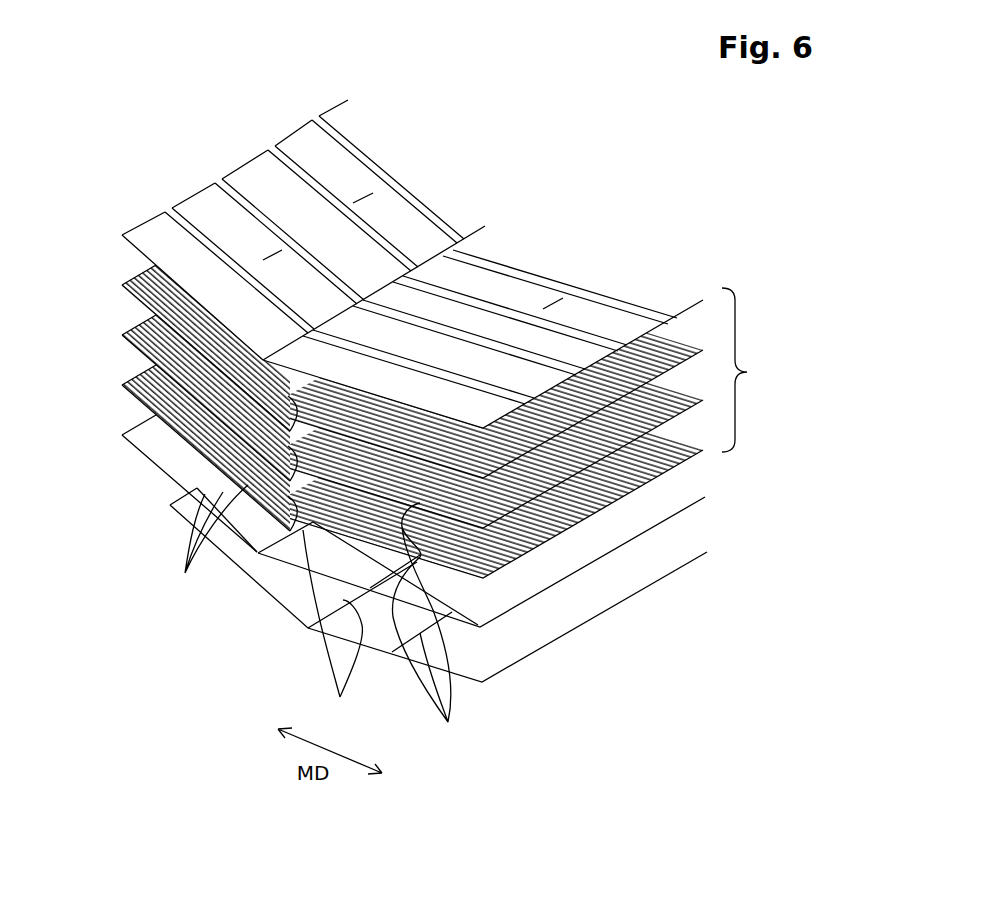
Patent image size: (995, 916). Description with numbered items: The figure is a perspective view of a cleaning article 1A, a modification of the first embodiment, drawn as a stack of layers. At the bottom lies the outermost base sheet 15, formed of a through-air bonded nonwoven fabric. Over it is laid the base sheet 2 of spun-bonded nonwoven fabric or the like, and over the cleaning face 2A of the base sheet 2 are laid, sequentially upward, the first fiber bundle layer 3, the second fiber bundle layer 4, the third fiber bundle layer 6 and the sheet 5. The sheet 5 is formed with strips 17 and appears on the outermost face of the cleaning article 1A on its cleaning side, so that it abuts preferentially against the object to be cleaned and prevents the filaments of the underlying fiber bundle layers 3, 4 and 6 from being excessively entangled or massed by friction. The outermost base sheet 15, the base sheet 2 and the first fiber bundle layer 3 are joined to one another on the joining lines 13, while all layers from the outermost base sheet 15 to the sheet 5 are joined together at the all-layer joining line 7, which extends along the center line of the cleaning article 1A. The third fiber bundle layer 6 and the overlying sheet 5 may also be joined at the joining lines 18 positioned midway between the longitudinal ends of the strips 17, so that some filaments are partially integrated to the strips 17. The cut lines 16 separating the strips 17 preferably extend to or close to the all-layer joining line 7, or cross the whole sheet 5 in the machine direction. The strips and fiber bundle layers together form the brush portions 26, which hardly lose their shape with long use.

The cleaning article 1A is at (434, 140).
The base sheet 2 is at (132, 425).
The cleaning face 2A is at (603, 545).
The first fiber bundle layer 3 is at (130, 370).
The second fiber bundle layer 4 is at (132, 318).
The sheet 5 is at (190, 192).
The third fiber bundle layer 6 is at (127, 270).
The all-layer joining line 7 is at (472, 232).
The joining lines 13 is at (213, 493).
The outermost base sheet 15 is at (553, 627).
The cut lines 16 is at (503, 272).
The strips 17 is at (300, 192).
The joining lines 18 is at (363, 200).
The brush portions 26 is at (751, 370).